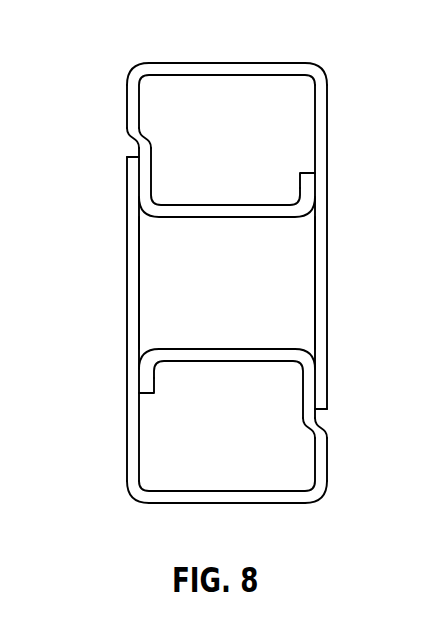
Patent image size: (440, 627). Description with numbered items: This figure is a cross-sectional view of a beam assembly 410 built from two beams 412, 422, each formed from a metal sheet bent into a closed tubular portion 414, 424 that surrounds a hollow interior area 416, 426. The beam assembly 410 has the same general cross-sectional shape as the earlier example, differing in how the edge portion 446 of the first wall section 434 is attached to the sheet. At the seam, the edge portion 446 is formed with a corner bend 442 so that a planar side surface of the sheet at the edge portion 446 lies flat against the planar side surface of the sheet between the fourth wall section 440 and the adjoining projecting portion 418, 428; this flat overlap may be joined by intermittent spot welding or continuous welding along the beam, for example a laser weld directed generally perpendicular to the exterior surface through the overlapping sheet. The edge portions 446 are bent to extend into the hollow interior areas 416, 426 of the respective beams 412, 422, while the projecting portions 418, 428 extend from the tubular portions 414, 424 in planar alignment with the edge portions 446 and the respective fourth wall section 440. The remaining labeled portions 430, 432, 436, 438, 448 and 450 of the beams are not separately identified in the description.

The beam assembly 410 is at (79, 77).
The beam 412 is at (298, 48).
The tubular portion 414 is at (157, 48).
The hollow interior area 416 is at (245, 157).
The projecting portion 418 is at (327, 270).
The beam 422 is at (154, 515).
The tubular portion 424 is at (301, 515).
The hollow interior area 426 is at (243, 440).
The projecting portion 428 is at (127, 270).
The wall end cap 430 is at (127, 173).
The central channel 432 is at (245, 292).
The first wall section 434 is at (212, 205).
The offset wall portion 436 is at (127, 115).
The end wall 438 is at (206, 62).
The fourth wall section 440 is at (327, 138).
The corner bend 442 is at (143, 78).
The edge portion 446 is at (306, 178).
The wall transition 448 is at (131, 138).
The outer wall segment 450 is at (127, 90).